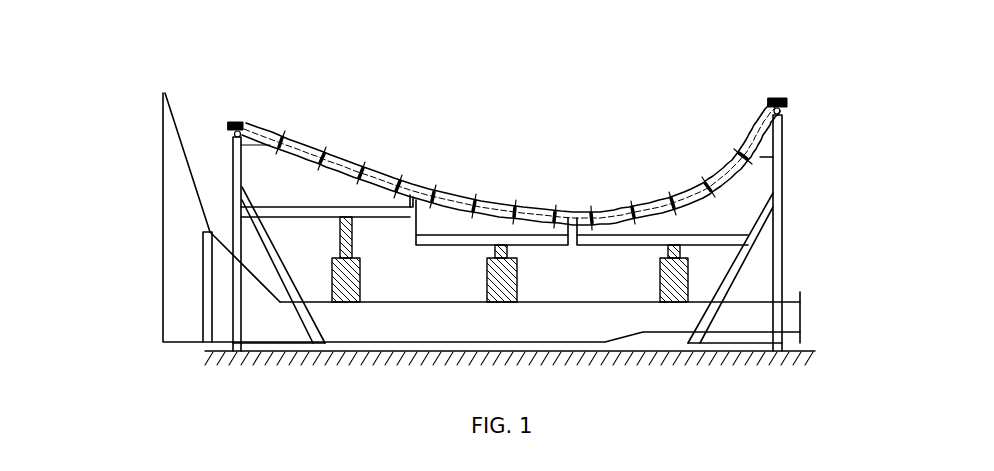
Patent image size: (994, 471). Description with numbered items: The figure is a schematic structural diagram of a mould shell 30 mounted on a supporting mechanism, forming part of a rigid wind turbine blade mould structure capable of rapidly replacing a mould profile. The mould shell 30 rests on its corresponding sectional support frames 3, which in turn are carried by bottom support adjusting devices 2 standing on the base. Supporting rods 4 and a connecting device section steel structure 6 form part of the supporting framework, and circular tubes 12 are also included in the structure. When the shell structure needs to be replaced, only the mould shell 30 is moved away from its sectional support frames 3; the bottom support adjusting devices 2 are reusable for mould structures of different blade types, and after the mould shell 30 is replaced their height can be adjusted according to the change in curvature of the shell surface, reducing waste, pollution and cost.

The connecting device section steel structure 6 is at (232, 124).
The mould shell 30 is at (760, 156).
The circular tubes 12 is at (728, 183).
The sectional support frames 3 is at (707, 243).
The supporting rods 4 is at (258, 229).
The bottom support adjusting devices 2 is at (682, 287).